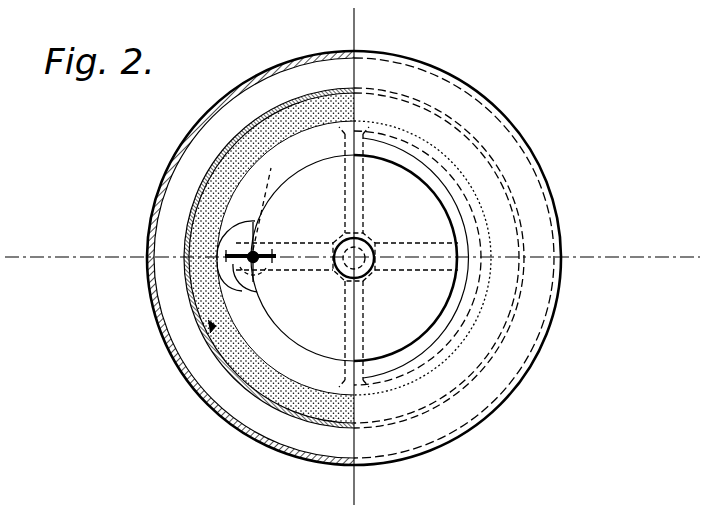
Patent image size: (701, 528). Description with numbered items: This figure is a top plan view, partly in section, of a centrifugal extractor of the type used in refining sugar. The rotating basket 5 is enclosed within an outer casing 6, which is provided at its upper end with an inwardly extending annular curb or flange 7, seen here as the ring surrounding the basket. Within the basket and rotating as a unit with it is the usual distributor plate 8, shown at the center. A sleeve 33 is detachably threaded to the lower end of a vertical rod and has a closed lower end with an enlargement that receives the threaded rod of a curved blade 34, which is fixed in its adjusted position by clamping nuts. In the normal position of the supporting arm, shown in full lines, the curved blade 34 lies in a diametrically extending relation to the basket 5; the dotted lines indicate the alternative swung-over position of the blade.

The rotating basket 5 is at (190, 268).
The outer casing 6 is at (162, 336).
The annular curb or flange 7 is at (452, 378).
The distributor plate 8 is at (407, 202).
The sleeve 33 is at (256, 254).
The curved blade 34 is at (272, 297).